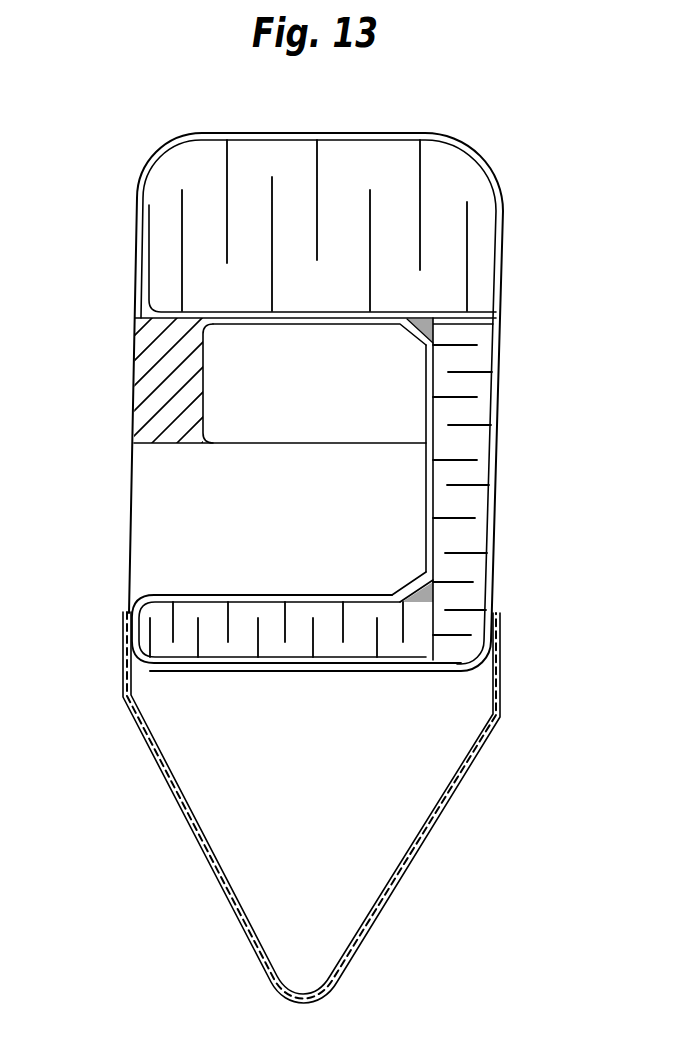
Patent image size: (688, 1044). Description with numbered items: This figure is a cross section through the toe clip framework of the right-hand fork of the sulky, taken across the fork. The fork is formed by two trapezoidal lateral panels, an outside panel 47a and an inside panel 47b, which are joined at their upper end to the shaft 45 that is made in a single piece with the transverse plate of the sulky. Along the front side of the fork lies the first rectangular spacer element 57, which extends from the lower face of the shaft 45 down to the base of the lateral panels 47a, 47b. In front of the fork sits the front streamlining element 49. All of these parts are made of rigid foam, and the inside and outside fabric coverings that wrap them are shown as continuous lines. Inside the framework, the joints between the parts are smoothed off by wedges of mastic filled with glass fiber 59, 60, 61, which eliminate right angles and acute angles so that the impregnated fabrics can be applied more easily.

The shaft 45 is at (453, 220).
The wedge of mastic filled with glass fiber 59 is at (333, 340).
The wedge of mastic filled with glass fiber 61 is at (434, 322).
The outside panel 47a is at (460, 445).
The inside panel 47b is at (163, 363).
The first rectangular spacer element 57 is at (160, 522).
The wedge of mastic filled with glass fiber 60 is at (423, 600).
The front streamlining element 49 is at (433, 833).